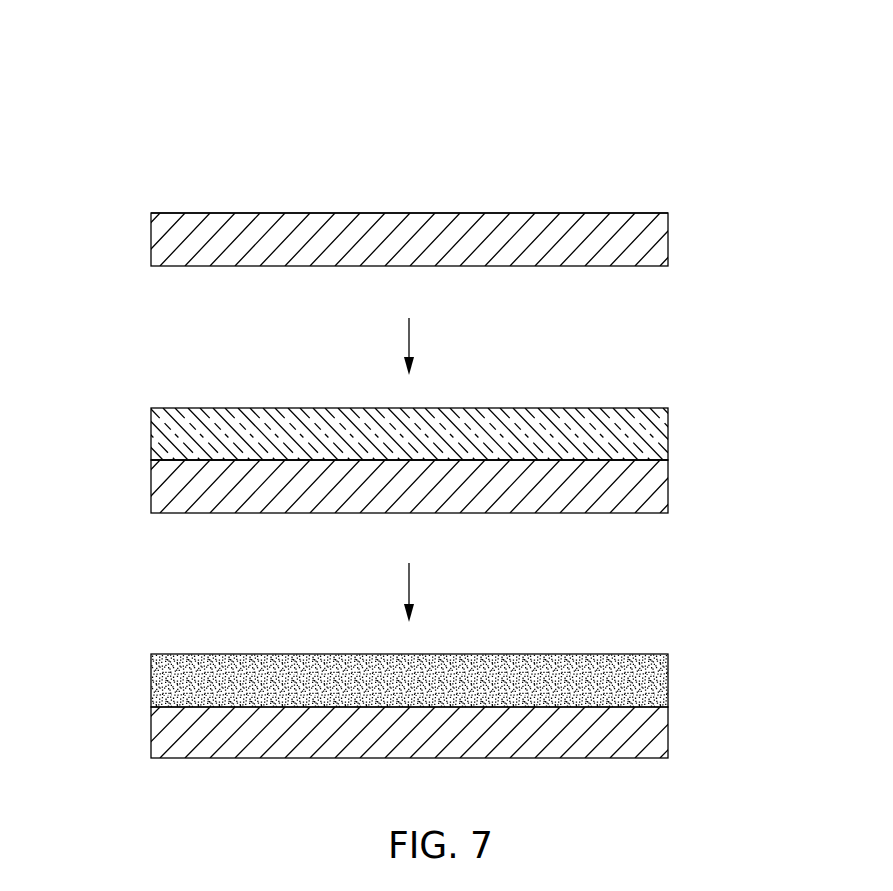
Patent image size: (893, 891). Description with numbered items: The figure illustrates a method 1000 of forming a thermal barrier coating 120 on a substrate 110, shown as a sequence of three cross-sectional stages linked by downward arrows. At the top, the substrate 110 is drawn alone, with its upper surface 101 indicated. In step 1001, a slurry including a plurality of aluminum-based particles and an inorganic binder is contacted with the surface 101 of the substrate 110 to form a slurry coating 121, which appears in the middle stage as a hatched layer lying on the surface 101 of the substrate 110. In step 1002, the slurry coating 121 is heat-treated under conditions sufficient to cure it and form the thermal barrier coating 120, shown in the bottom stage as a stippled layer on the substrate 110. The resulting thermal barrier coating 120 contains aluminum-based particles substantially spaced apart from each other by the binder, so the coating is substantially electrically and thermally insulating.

The method of forming a thermal barrier coating 1000 is at (176, 47).
The substrate 110 is at (670, 236).
The surface of the substrate 101 is at (673, 208).
The step of contacting slurry with substrate surface 1001 is at (409, 340).
The slurry coating 121 is at (670, 410).
The step of heat-treating the slurry coating 1002 is at (409, 584).
The thermal barrier coating 120 is at (670, 675).